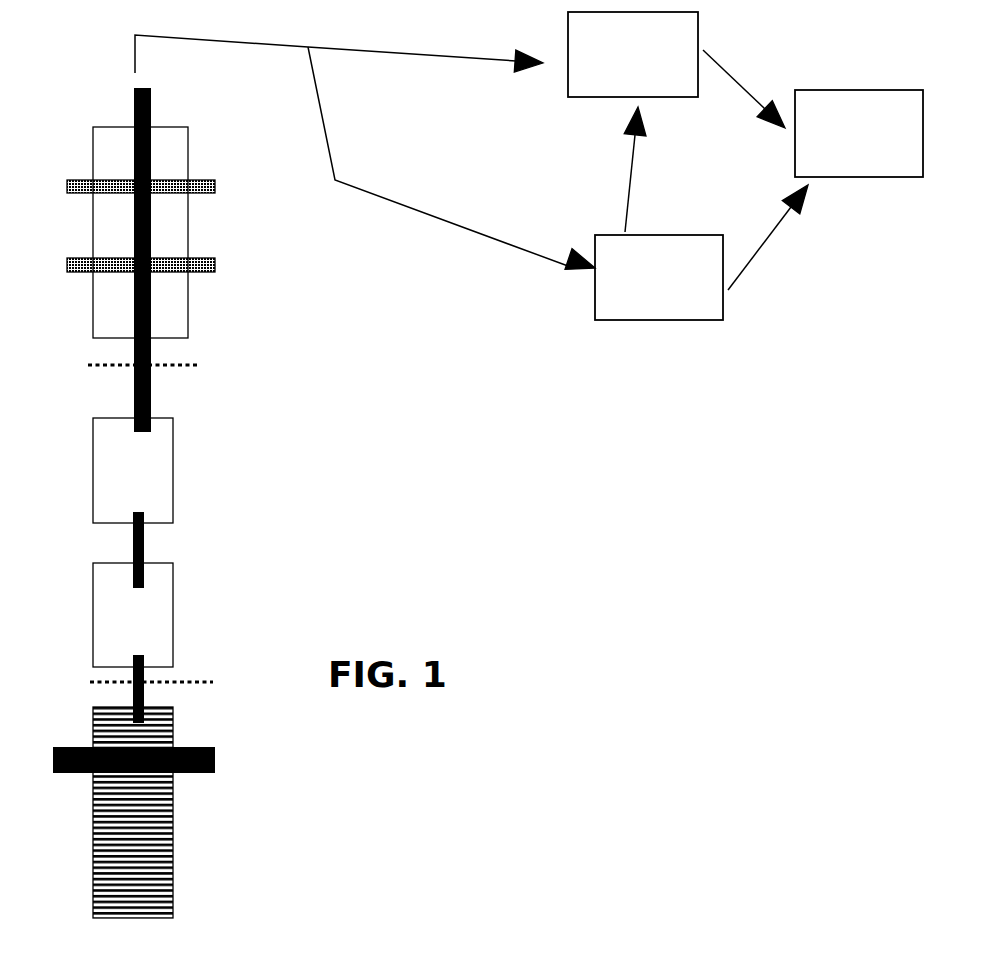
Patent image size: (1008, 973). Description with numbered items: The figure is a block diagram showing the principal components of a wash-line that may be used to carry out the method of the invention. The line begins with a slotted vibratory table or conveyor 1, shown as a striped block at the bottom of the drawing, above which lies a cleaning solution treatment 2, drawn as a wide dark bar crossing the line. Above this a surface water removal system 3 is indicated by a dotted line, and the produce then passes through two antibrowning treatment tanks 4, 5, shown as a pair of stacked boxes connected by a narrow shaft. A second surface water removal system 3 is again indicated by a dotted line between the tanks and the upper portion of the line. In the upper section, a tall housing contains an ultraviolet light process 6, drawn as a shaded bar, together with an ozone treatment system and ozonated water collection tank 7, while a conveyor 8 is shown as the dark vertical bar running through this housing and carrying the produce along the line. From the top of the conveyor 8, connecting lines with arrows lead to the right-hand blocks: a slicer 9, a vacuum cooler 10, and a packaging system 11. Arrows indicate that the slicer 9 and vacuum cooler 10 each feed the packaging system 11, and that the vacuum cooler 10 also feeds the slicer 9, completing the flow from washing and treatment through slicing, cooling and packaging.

The slotted vibratory table or conveyor 1 is at (97, 832).
The cleaning solution treatment 2 is at (50, 748).
The surface water removal system 3 is at (88, 366).
The antibrowning treatment tank 4 is at (90, 618).
The antibrowning treatment tank 5 is at (95, 487).
The ultraviolet light process 6 is at (77, 266).
The ozone treatment system and ozonated water collection tank 7 is at (90, 231).
The conveyor 8 is at (132, 100).
The slicer 9 is at (633, 54).
The vacuum cooler 10 is at (659, 277).
The packaging system 11 is at (859, 133).